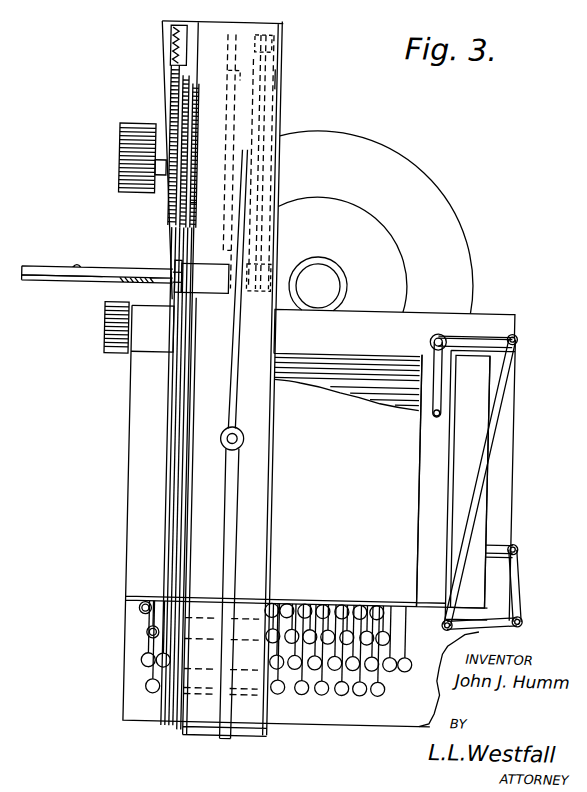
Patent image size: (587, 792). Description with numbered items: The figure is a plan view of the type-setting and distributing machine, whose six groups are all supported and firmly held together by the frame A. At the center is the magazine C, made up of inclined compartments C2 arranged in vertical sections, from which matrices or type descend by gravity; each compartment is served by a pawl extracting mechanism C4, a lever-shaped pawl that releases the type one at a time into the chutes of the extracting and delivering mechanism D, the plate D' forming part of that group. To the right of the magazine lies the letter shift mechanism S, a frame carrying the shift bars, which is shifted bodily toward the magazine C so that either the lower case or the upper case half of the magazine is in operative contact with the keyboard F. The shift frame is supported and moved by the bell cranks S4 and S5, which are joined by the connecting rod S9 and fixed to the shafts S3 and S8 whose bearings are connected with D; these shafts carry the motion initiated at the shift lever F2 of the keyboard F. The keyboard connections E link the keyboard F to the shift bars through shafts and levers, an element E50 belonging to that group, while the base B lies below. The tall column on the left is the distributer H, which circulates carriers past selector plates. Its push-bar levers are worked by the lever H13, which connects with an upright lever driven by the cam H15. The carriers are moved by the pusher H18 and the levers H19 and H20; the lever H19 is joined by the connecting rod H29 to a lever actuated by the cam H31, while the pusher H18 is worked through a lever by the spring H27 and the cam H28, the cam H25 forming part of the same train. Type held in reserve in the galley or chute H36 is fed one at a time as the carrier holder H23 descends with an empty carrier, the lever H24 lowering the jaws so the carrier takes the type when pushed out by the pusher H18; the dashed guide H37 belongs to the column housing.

The cam H31 is at (164, 83).
The spring H27 is at (179, 92).
The lever H24 is at (248, 58).
The cam H15 is at (226, 76).
The column wall H37 is at (270, 79).
The gear wheel H25 is at (114, 161).
The cam H28 is at (187, 210).
The pawl extracting mechanism C4 is at (97, 274).
The type galley or chute H36 is at (58, 287).
The carrier holder H23 is at (227, 281).
The gear E50 is at (103, 343).
The keyboard connections E is at (323, 332).
The frame A is at (336, 273).
The shaft S8 is at (471, 373).
The bell crank S5 is at (515, 336).
The magazine compartment C2 is at (325, 367).
The letter shift mechanism S is at (480, 479).
The connecting rod S9 is at (492, 435).
The extracting and delivering mechanism D is at (427, 481).
The frame plate D' is at (494, 482).
The magazine C is at (308, 516).
The connecting rod H29 is at (169, 443).
The lever H13 is at (236, 481).
The lever H19 is at (175, 471).
The lever H20 is at (182, 499).
The pusher H18 is at (188, 521).
The distributer H is at (215, 377).
The keyboard F is at (150, 647).
The shift lever F2 is at (412, 647).
The bell crank S4 is at (521, 548).
The shaft S3 is at (527, 618).
The base B is at (460, 720).